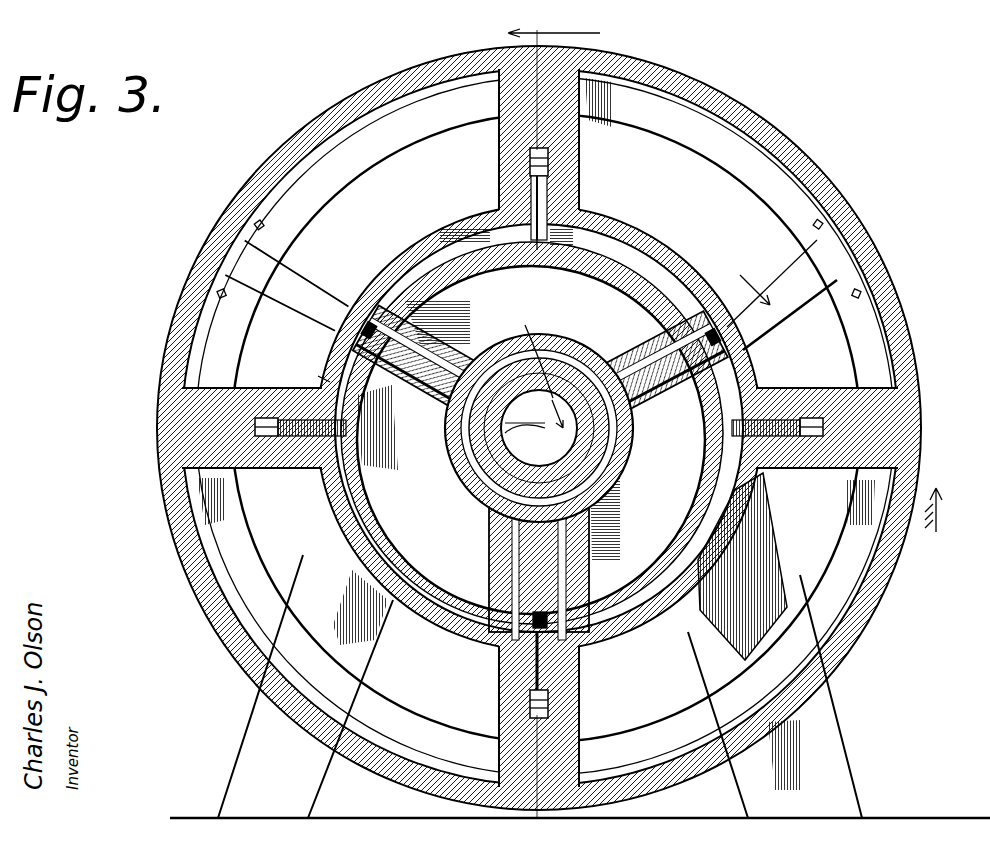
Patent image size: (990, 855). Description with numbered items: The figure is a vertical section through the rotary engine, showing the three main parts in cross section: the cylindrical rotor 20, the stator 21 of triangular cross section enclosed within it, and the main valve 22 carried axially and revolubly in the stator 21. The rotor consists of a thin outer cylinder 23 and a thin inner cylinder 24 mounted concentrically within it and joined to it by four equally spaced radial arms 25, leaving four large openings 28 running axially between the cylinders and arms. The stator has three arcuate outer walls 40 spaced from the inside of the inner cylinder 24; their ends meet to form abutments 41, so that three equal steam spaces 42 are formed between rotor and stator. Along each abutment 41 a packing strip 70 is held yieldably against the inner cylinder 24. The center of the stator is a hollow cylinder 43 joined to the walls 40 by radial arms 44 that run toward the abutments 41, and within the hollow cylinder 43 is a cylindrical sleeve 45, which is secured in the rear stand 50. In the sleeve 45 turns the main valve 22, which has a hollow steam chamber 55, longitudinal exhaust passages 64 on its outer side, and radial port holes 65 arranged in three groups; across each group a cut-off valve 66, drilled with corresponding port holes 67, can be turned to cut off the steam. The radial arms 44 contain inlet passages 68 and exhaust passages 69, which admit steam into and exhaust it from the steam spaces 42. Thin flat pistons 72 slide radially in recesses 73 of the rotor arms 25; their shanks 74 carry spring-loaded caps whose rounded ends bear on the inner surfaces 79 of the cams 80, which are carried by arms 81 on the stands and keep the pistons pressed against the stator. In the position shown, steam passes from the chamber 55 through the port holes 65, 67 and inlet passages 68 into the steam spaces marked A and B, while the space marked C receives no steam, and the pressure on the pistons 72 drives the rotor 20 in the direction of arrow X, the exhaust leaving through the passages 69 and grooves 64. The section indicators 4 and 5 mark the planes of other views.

The cylindrical rotor 20 is at (905, 306).
The thin outer cylinder 23 is at (800, 160).
The inner cam surface 79 is at (407, 143).
The cam 80 is at (455, 115).
The radial arm 25 is at (580, 140).
The opening 28 is at (185, 330).
The main valve 22 is at (608, 455).
The arcuate outer wall 40 is at (638, 628).
The thin inner cylinder 24 is at (670, 247).
The stator 21 is at (728, 500).
The radial arm 44 is at (470, 340).
The hollow cylinder 43 is at (570, 345).
The cylindrical sleeve 45 is at (528, 340).
The inlet passage 68 is at (600, 335).
The exhaust passage 64 is at (480, 485).
The hollow chamber 55 is at (492, 490).
The port hole 65 is at (539, 428).
The cut-off valve 66 is at (525, 409).
The port hole 67 is at (525, 435).
The recess 73 is at (548, 165).
The shank 74 is at (530, 165).
The piston 72 is at (560, 240).
The exhaust passage 69 is at (665, 415).
The packing strip 70 is at (725, 340).
The arm 81 is at (307, 290).
The abutment 41 is at (745, 352).
The steam space 42 is at (717, 527).
The rear stand 50 is at (262, 770).
The section line 5- 5 is at (647, 343).
The section line 4- 4 is at (570, 423).
The arrow X is at (939, 513).
The steam space A is at (545, 240).
The steam space B is at (318, 378).
The steam space C is at (686, 561).